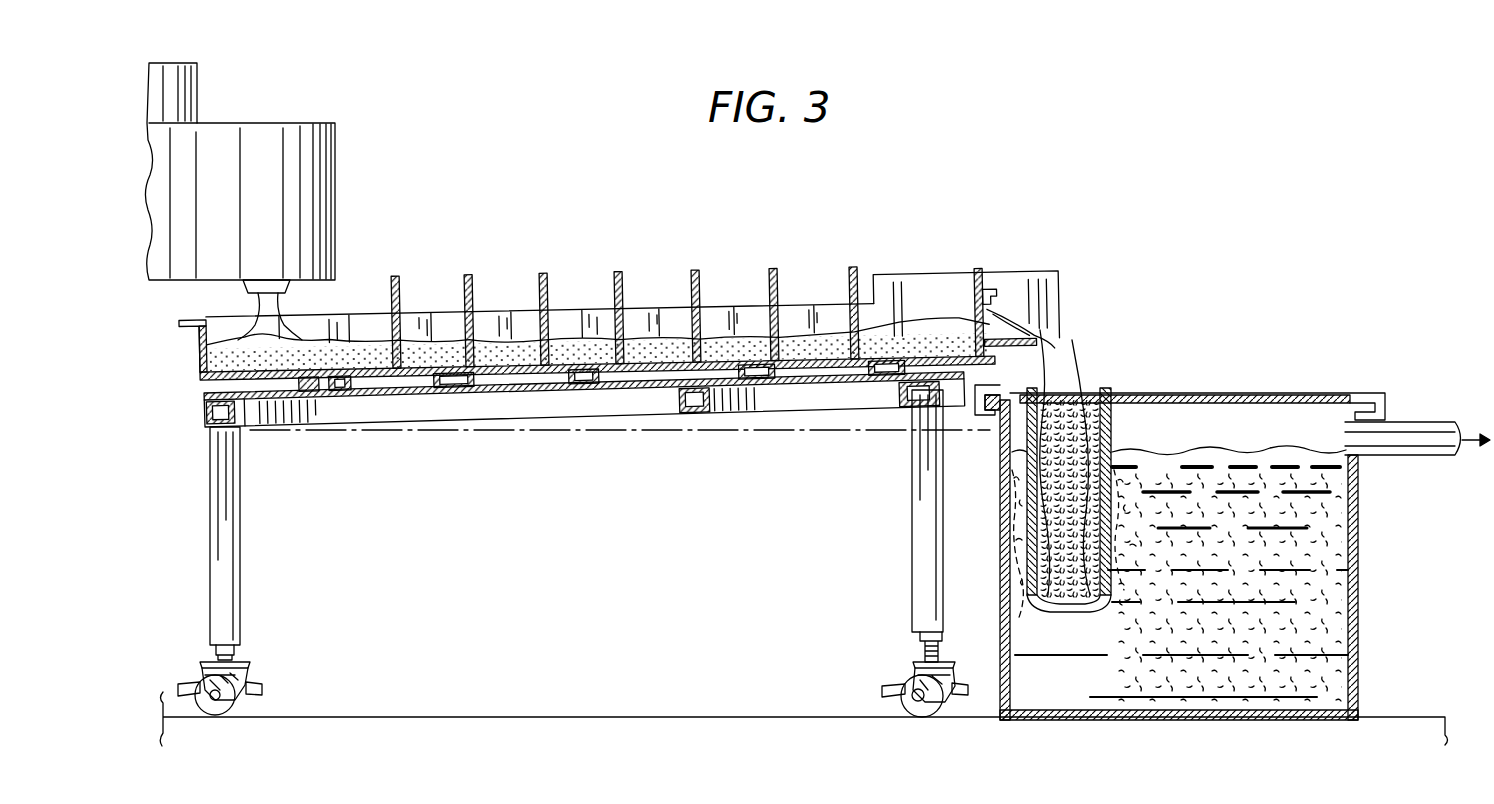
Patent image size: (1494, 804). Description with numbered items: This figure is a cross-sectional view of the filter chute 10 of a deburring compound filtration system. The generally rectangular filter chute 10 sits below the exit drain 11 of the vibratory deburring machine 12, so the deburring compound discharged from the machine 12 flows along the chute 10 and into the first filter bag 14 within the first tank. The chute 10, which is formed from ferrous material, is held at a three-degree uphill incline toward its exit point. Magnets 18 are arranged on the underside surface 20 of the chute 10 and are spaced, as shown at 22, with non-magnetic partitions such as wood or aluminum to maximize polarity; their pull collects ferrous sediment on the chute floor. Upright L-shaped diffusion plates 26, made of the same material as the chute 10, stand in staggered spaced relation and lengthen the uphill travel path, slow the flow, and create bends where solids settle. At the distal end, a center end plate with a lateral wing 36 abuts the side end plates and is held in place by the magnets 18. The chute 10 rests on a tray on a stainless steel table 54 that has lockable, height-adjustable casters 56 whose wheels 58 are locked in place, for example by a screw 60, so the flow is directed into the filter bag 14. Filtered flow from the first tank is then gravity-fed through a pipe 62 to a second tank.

The filter chute 10 is at (670, 280).
The exit drain 11 is at (290, 293).
The vibratory deburring machine 12 is at (318, 203).
The first filter bag 14 is at (1120, 458).
The magnets 18 is at (800, 390).
The underside surface 20 is at (340, 382).
The spacing 22 is at (738, 388).
The L-shaped diffusion plates 26 is at (553, 290).
The lateral wing 36 is at (996, 300).
The stainless steel table 54 is at (918, 560).
The casters 56 is at (250, 683).
The wheels 58 is at (905, 708).
The screw 60 is at (922, 652).
The pipe 62 is at (1420, 425).